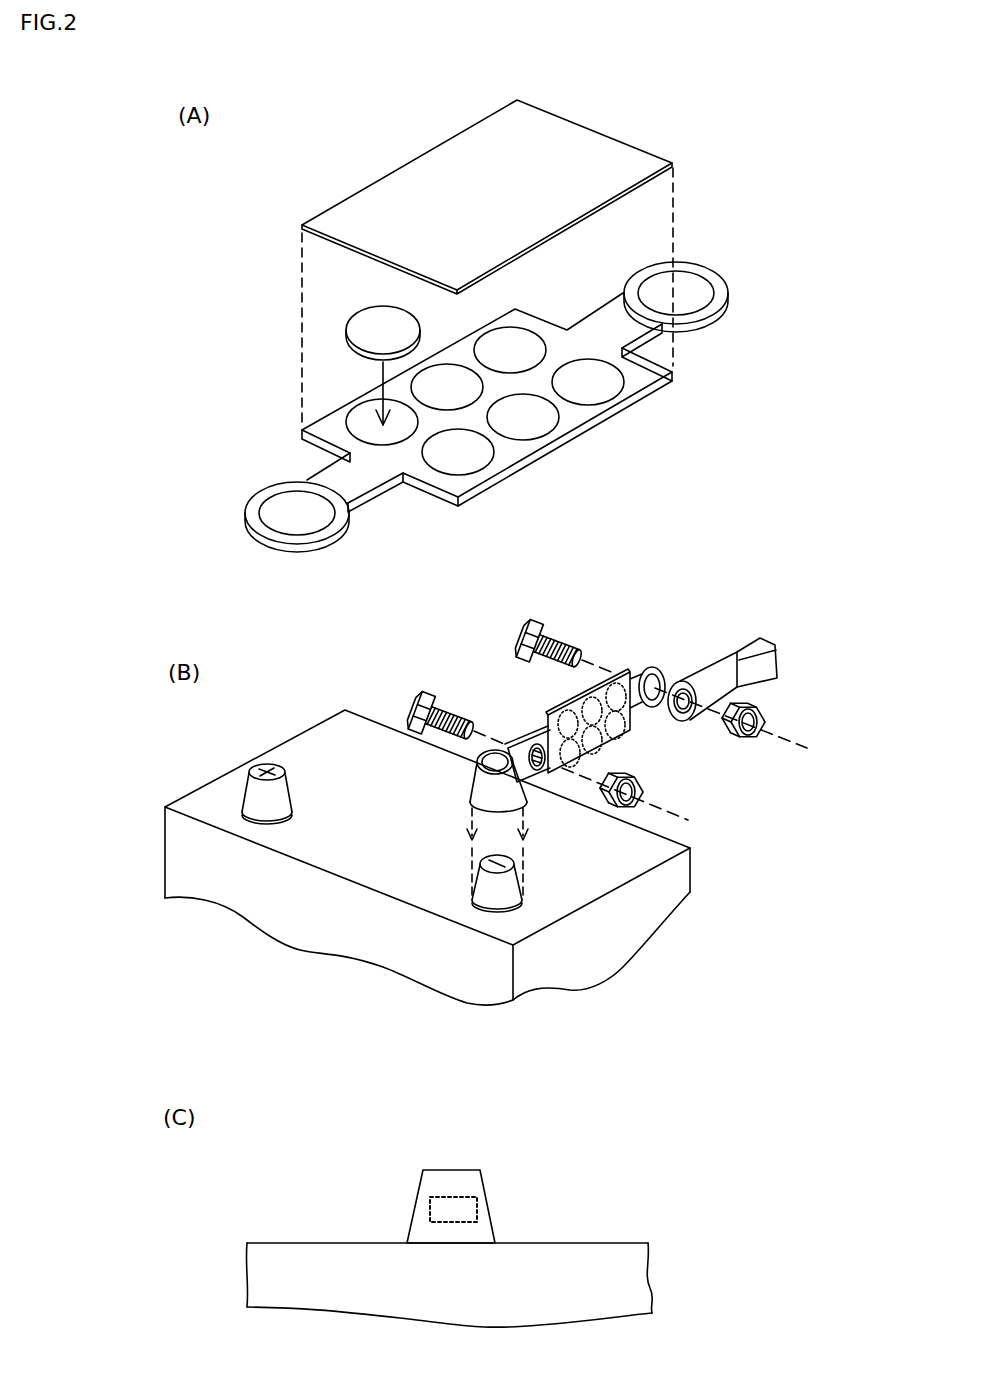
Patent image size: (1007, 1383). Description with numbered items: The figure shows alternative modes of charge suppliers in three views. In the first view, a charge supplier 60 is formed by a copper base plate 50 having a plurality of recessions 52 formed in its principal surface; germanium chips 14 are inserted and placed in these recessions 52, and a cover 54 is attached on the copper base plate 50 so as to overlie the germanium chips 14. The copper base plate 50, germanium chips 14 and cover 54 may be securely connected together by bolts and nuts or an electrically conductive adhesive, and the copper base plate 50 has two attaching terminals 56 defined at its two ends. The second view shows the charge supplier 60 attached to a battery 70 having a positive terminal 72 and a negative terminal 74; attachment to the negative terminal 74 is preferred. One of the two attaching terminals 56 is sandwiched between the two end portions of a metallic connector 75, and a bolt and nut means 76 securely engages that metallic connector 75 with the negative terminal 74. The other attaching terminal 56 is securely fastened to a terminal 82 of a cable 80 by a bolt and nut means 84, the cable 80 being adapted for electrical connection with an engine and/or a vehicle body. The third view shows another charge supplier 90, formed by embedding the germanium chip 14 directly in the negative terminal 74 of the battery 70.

The germanium chip 14 is at (367, 320).
The copper base plate 50 is at (551, 334).
The recession 52 is at (363, 422).
The cover 54 is at (600, 148).
The attaching terminal 56 is at (279, 506).
The charge supplier 60 is at (681, 112).
The battery 70 is at (340, 727).
The positive terminal 72 is at (268, 766).
The negative terminal 74 is at (512, 895).
The metallic connector 75 is at (468, 783).
The bolt and nut means 76 is at (450, 707).
The cable 80 is at (744, 658).
The terminal 82 is at (712, 660).
The bolt and nut means 84 is at (553, 632).
The charge supplier 90 is at (499, 1049).